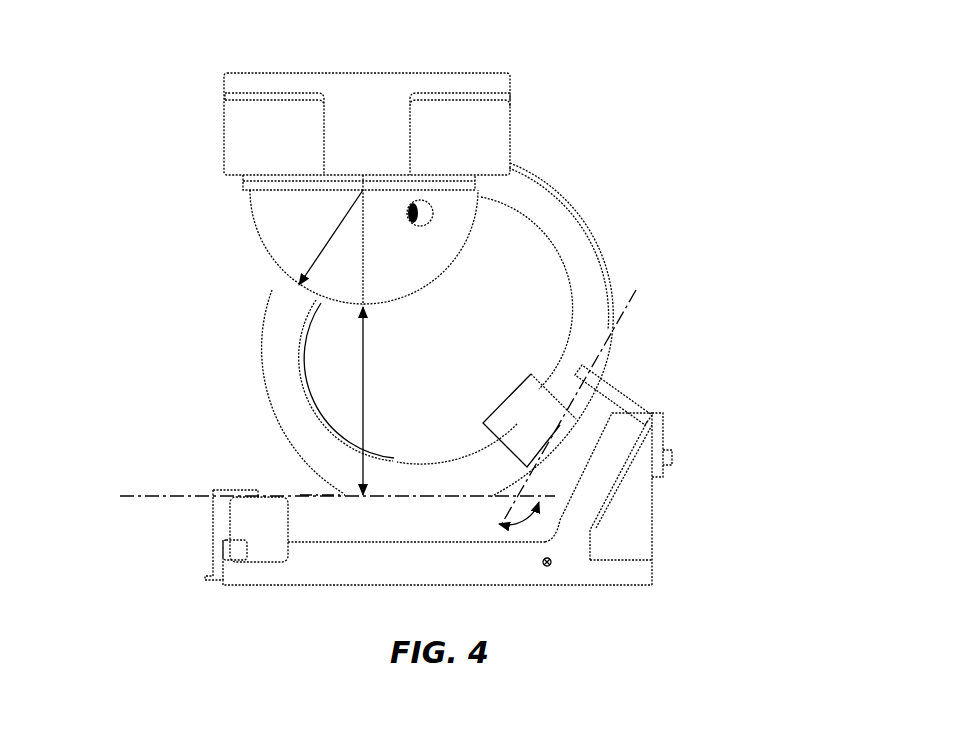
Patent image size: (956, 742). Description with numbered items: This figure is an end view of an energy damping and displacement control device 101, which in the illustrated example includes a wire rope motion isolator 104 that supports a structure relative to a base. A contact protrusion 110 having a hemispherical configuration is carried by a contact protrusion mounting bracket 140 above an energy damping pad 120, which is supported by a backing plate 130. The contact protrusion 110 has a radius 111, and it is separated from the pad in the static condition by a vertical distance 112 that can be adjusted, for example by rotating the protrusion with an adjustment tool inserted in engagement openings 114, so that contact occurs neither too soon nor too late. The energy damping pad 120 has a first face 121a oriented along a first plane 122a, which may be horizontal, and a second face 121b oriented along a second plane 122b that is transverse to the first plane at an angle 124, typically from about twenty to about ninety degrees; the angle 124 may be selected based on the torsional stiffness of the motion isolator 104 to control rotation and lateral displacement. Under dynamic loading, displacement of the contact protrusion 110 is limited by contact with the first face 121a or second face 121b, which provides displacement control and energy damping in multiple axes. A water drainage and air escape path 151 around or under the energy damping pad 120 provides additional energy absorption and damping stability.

The energy damping and displacement control device 101 is at (420, 321).
The motion isolator 104 is at (591, 186).
The contact protrusion 110 is at (273, 265).
The radius 111 is at (330, 247).
The vertical distance 112 is at (366, 386).
The engagement openings 114 is at (430, 220).
The energy damping pad 120 is at (350, 525).
The first face 121a is at (325, 493).
The second face 121b is at (545, 432).
The first plane 122a is at (160, 494).
The second plane 122b is at (636, 290).
The angle 124 is at (527, 520).
The backing plate 130 is at (600, 488).
The contact protrusion mounting bracket 140 is at (235, 136).
The water drainage and/or air escape path 151 is at (550, 569).